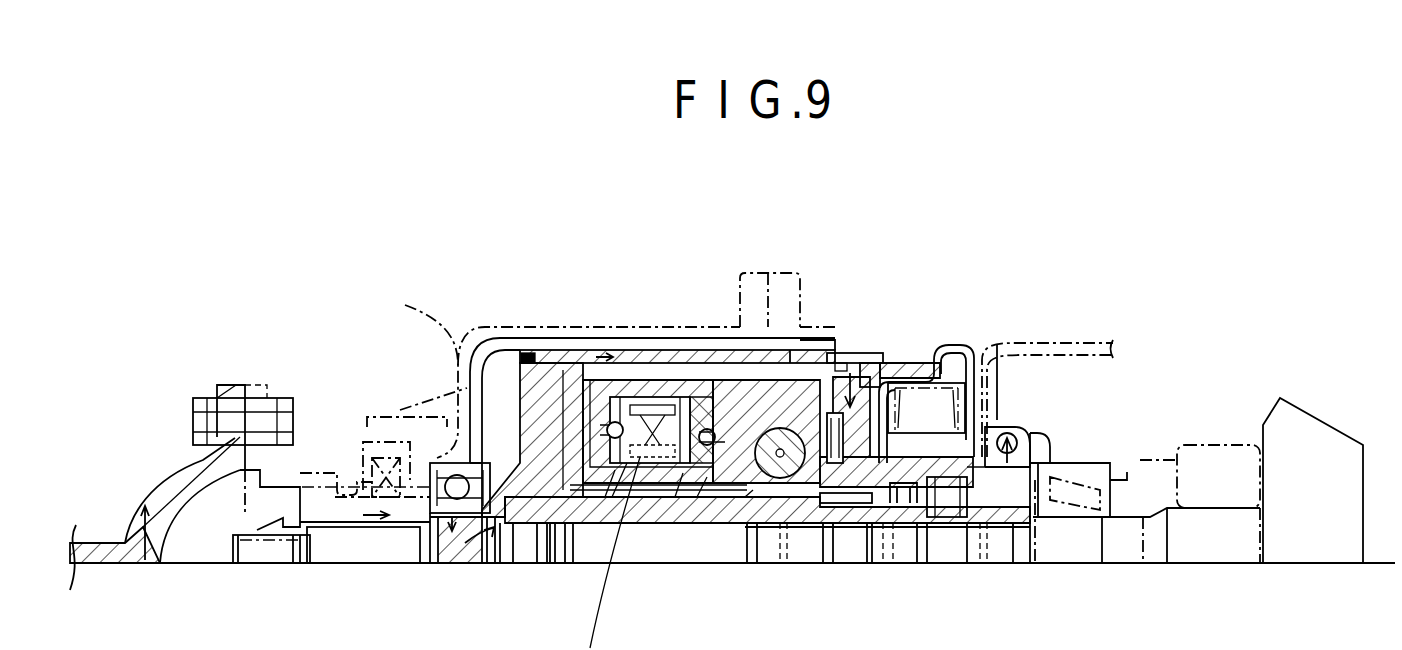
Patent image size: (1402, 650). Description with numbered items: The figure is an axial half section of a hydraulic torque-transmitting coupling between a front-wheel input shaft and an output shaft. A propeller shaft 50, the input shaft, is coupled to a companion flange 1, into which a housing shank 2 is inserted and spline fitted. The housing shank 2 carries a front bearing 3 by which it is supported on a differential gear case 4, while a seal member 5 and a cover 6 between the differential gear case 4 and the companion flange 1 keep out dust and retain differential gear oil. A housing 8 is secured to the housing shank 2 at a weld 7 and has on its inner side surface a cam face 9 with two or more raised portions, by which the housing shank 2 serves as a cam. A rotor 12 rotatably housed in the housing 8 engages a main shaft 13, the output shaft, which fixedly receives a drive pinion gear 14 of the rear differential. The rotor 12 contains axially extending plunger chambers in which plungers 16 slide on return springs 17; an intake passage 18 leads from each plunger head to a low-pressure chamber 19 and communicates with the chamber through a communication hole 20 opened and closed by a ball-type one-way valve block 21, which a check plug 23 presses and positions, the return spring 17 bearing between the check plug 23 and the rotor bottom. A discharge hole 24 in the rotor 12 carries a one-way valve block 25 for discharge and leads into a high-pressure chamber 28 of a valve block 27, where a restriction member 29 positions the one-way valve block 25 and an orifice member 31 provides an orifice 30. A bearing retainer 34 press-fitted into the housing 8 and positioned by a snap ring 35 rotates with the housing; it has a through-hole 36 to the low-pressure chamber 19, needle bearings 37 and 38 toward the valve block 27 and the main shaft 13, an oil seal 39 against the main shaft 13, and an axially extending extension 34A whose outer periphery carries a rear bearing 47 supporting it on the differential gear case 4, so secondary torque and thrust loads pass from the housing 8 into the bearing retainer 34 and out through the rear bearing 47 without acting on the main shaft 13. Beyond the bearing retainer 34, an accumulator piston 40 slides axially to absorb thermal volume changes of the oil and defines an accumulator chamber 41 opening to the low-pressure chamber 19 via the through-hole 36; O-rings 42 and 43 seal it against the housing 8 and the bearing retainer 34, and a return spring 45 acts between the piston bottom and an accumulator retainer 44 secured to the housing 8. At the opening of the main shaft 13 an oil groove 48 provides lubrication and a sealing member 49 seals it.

The companion flange 1 is at (268, 480).
The housing shank 2 is at (447, 540).
The front bearing 3 is at (432, 463).
The differential gear case 4 is at (616, 368).
The seal member 5 is at (387, 458).
The cover 6 is at (343, 473).
The weld 7 is at (527, 350).
The housing 8 is at (548, 350).
The cam face 9 is at (540, 540).
The rotor 12 is at (613, 350).
The main shaft 13 is at (900, 523).
The drive pinion gear 14 is at (1212, 555).
The plunger 16 is at (612, 497).
The return spring 17 is at (682, 380).
The intake passage 18 is at (567, 350).
The low-pressure chamber 19 is at (750, 350).
The communication hole 20 is at (605, 497).
The one-way valve block for intake 21 is at (627, 397).
The check plug 23 is at (648, 405).
The discharge hole 24 is at (675, 497).
The one-way valve block for discharge 25 is at (698, 397).
The valve block 27 is at (727, 350).
The high-pressure chamber 28 is at (697, 497).
The restriction member 29 is at (792, 355).
The orifice 30 is at (745, 497).
The orifice member 31 is at (763, 478).
The bearing retainer 34 is at (866, 363).
The extension 34A is at (970, 523).
The snap ring 35 is at (881, 363).
The through-hole 36 is at (836, 353).
The needle bearing 37 is at (797, 525).
The needle bearing 38 is at (827, 523).
The oil seal 39 is at (935, 523).
The accumulator piston 40 is at (988, 338).
The accumulator chamber 41 is at (914, 353).
The O-ring 42 is at (934, 337).
The O-ring 43 is at (853, 523).
The accumulator retainer 44 is at (1027, 420).
The return spring 45 is at (1043, 345).
The rear bearing 47 is at (1020, 425).
The oil groove 48 is at (497, 540).
The sealing member 49 is at (555, 540).
The propeller shaft 50 is at (160, 480).